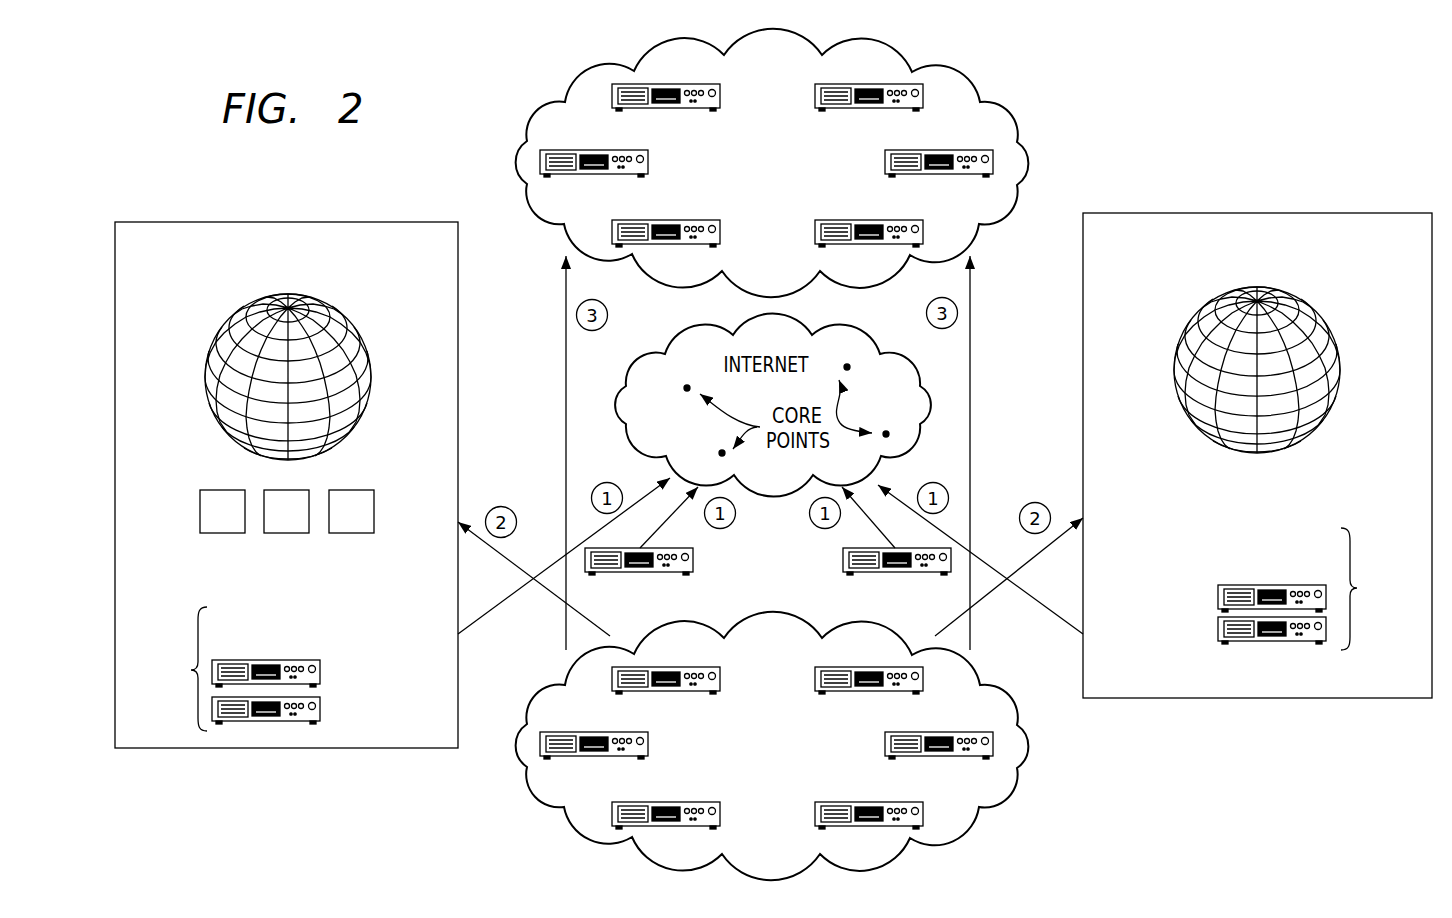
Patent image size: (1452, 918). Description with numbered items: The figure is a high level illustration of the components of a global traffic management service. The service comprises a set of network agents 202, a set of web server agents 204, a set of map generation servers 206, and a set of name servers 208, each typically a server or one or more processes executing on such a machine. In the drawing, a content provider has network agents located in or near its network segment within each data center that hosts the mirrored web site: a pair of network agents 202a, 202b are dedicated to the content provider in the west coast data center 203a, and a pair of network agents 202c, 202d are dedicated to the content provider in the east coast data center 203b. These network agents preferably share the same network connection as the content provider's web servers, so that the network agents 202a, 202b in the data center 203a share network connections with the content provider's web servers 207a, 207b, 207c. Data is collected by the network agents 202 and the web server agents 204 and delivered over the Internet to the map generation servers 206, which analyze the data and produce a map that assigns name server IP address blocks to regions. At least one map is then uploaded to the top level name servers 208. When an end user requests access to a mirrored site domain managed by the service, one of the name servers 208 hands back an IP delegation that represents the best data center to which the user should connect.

The network agents 202 is at (775, 633).
The network agent 202a is at (322, 672).
The network agent 202b is at (322, 706).
The network agent 202c is at (1218, 597).
The network agent 202d is at (1218, 630).
The data center 203a is at (285, 222).
The data center 203b is at (1257, 213).
The web server agents 204 is at (722, 679).
The map generation servers 206 is at (640, 576).
The web server 207a is at (200, 512).
The web server 207b is at (287, 533).
The web server 207c is at (374, 510).
The name servers 208 is at (650, 48).